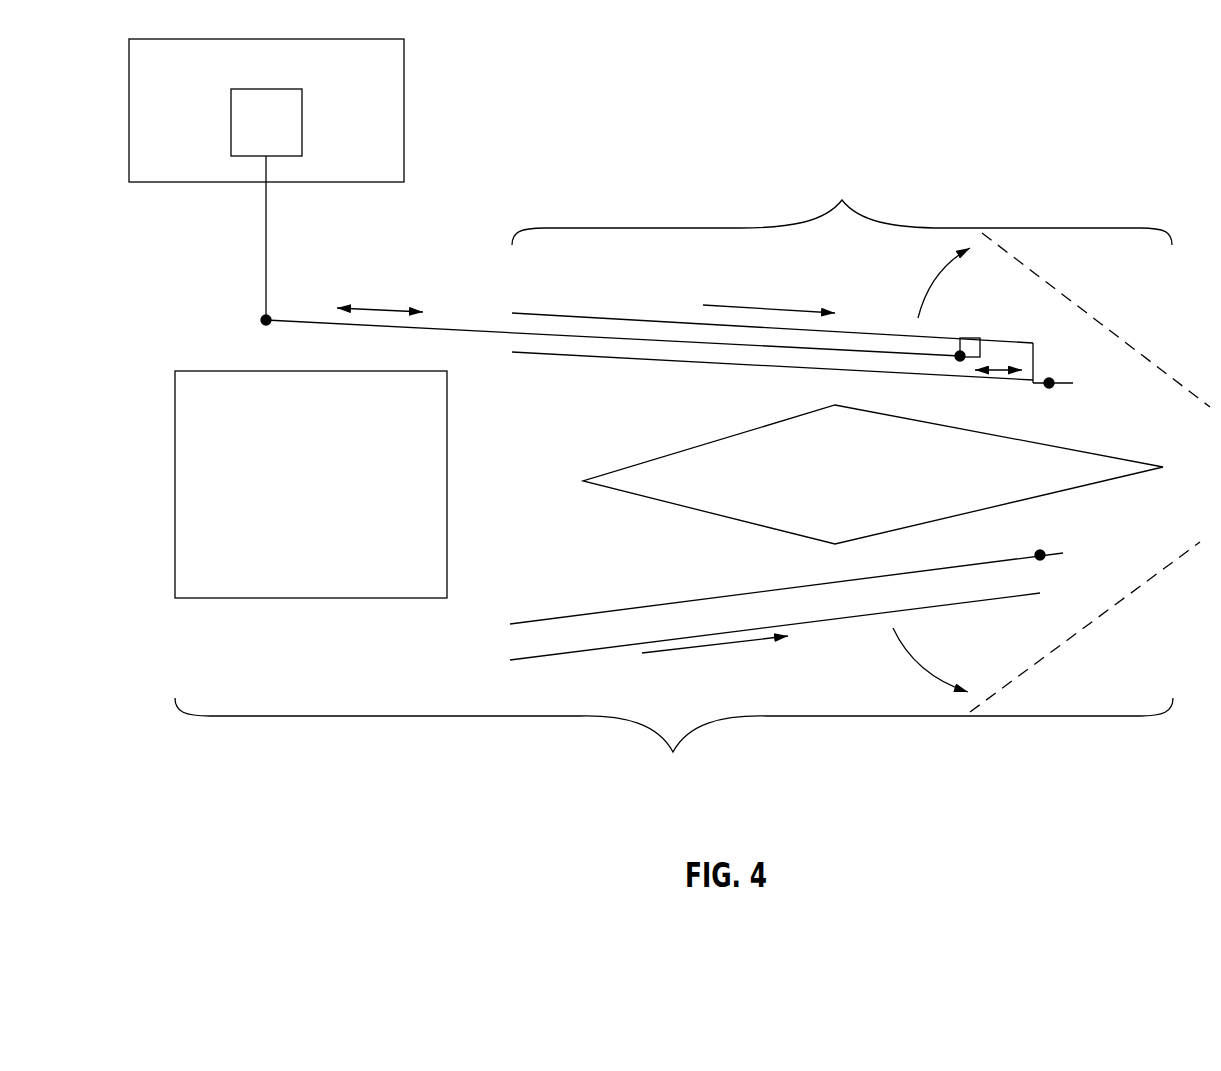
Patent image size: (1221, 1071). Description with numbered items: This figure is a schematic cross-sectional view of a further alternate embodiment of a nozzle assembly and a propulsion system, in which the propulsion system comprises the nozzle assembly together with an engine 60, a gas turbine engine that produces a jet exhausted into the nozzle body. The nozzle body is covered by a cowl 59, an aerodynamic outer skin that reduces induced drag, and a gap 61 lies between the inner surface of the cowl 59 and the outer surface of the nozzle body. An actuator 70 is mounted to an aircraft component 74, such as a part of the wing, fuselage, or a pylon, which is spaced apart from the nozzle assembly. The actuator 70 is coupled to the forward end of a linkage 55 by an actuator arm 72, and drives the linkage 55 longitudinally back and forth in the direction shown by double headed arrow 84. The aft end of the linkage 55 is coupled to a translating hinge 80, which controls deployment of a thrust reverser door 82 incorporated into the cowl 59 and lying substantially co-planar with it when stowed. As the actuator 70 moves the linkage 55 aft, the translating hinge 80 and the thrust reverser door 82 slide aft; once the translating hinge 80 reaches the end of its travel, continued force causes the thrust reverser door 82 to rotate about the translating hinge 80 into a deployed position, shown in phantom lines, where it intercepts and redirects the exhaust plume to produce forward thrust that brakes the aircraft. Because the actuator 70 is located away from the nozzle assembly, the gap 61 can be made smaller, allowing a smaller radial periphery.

The aircraft component 74 is at (405, 80).
The actuator 70 is at (302, 122).
The actuator arm 72 is at (267, 227).
The linkage 55 is at (452, 330).
The cowl 59 is at (583, 318).
The engine 60 is at (302, 598).
The gap 61 is at (1036, 362).
The translating hinge 80 is at (982, 350).
The thrust reverser door 82 is at (928, 336).
The double headed arrow 84 is at (990, 372).